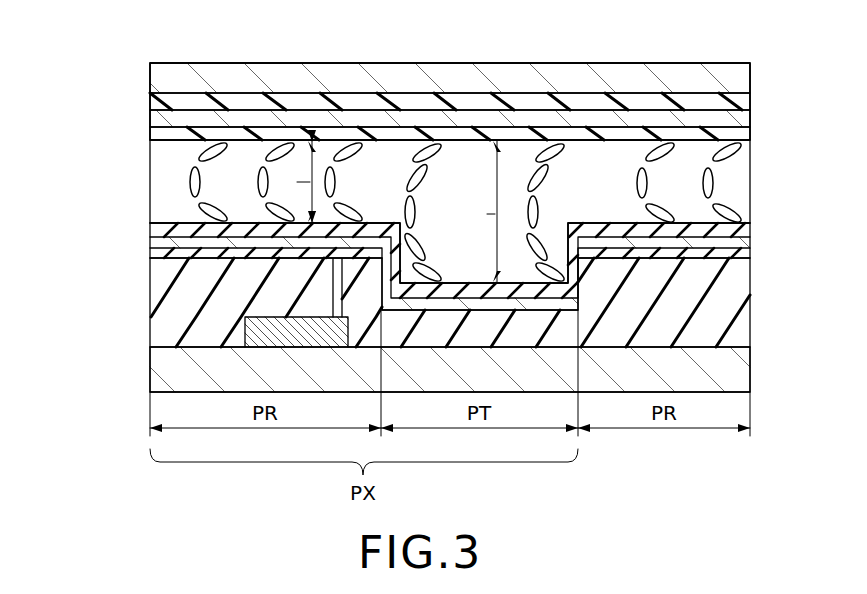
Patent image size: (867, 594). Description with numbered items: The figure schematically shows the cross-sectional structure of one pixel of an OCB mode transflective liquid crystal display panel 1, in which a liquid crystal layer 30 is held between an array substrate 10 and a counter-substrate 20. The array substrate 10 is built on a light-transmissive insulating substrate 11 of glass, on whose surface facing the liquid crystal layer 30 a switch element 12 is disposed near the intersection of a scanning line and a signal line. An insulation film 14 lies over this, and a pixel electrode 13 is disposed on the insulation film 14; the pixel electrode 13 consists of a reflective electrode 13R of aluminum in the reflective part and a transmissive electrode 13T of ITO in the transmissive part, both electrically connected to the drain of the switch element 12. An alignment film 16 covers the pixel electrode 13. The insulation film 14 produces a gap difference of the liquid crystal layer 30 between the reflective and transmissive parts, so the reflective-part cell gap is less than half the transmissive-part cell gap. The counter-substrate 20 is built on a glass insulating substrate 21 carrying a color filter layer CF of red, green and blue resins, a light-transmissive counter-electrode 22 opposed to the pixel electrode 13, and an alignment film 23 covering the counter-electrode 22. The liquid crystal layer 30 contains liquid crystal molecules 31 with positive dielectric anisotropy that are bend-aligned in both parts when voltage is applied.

The liquid crystal display panel 1 is at (787, 71).
The counter-substrate 20 is at (760, 118).
The insulating substrate 21 is at (150, 73).
The color filter layer CF is at (150, 100).
The counter-electrode 22 is at (150, 118).
The alignment film 23 is at (150, 133).
The liquid crystal layer 30 is at (723, 178).
The liquid crystal molecules 31 is at (189, 183).
The array substrate 10 is at (765, 258).
The alignment film 16 is at (751, 237).
The pixel electrode 13 is at (70, 223).
The transmissive electrode 13T is at (150, 238).
The reflective electrode 13R is at (150, 256).
The insulation film 14 is at (740, 320).
The switch element 12 is at (250, 330).
The insulating substrate 11 is at (751, 370).